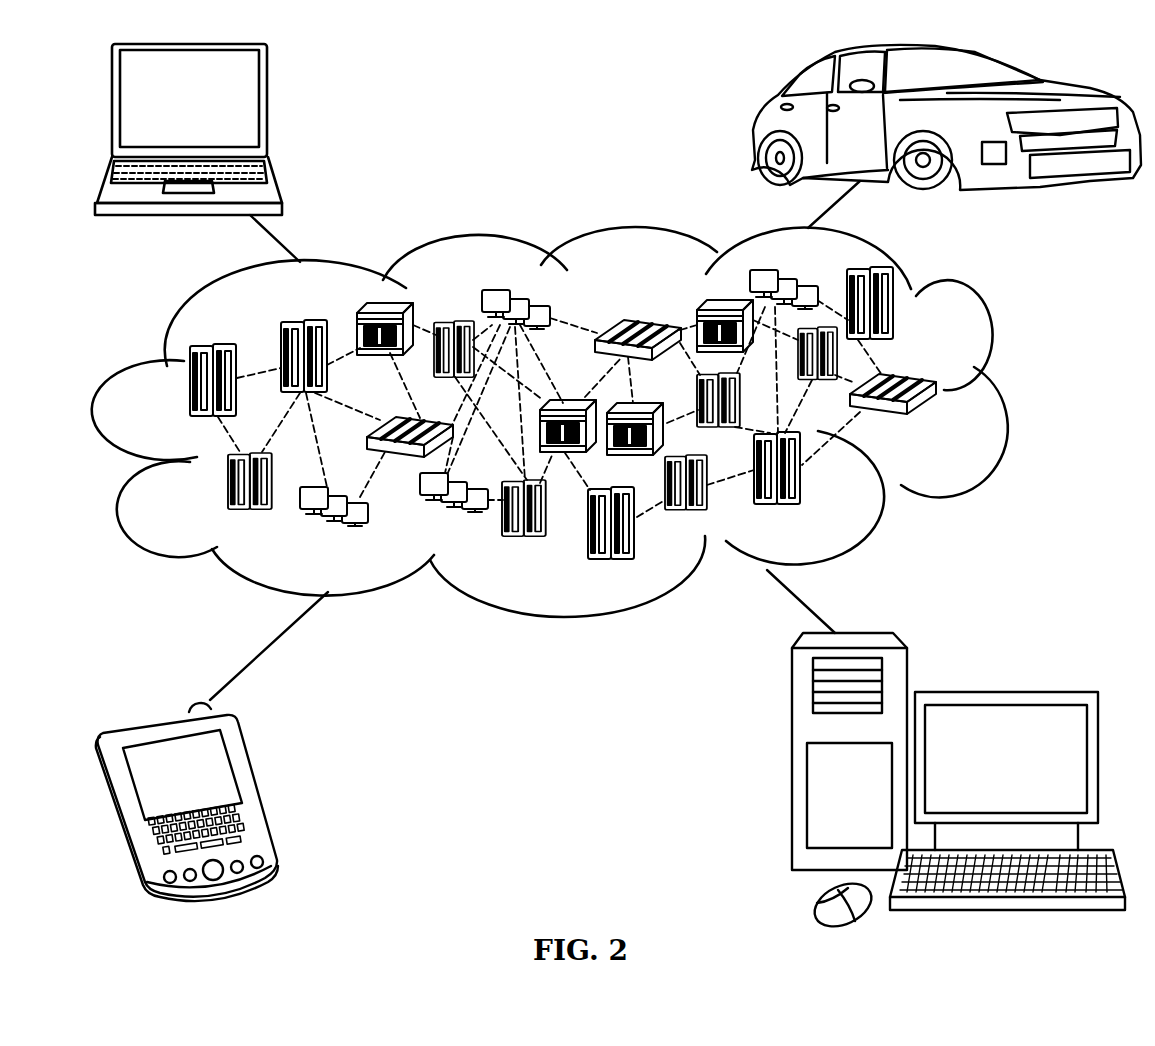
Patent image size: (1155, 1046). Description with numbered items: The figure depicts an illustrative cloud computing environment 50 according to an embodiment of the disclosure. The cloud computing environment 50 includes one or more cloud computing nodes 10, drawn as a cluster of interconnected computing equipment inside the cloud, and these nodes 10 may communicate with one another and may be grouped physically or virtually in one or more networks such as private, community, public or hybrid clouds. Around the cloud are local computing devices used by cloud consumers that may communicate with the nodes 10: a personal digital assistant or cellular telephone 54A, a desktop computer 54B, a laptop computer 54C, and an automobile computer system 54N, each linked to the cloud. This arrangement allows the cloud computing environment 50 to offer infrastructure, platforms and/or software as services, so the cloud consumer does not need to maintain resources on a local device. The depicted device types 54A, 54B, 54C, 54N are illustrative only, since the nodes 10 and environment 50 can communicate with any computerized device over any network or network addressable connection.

The cloud computing nodes 10 is at (948, 429).
The cloud computing environment 50 is at (1003, 390).
The personal digital assistant (PDA) or cellular telephone 54A is at (257, 790).
The desktop computer 54B is at (1002, 692).
The laptop computer 54C is at (267, 108).
The automobile computer system 54N is at (760, 128).